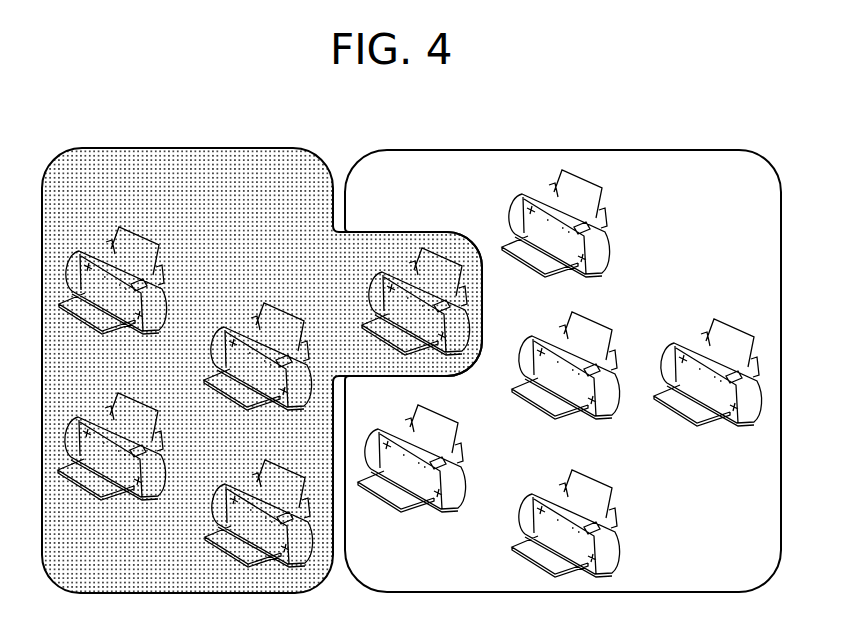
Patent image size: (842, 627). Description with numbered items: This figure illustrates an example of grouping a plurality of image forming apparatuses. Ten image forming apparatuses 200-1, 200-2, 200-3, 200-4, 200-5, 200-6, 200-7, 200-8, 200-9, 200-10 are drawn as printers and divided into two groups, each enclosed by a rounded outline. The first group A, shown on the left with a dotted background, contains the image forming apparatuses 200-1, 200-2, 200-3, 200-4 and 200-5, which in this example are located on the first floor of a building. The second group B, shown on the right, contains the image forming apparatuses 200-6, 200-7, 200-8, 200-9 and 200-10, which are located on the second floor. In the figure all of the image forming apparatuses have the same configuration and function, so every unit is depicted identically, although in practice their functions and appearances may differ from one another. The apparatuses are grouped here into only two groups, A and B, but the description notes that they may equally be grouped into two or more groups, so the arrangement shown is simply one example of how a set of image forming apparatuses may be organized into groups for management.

The image forming apparatus 200-1 is at (84, 252).
The image forming apparatus 200-2 is at (84, 418).
The image forming apparatus 200-3 is at (228, 328).
The image forming apparatus 200-4 is at (228, 485).
The image forming apparatus 200-5 is at (384, 273).
The image forming apparatus 200-6 is at (384, 430).
The image forming apparatus 200-7 is at (536, 496).
The image forming apparatus 200-8 is at (536, 337).
The image forming apparatus 200-9 is at (528, 194).
The image forming apparatus 200-10 is at (678, 343).
The group A is at (190, 147).
The group B is at (615, 149).